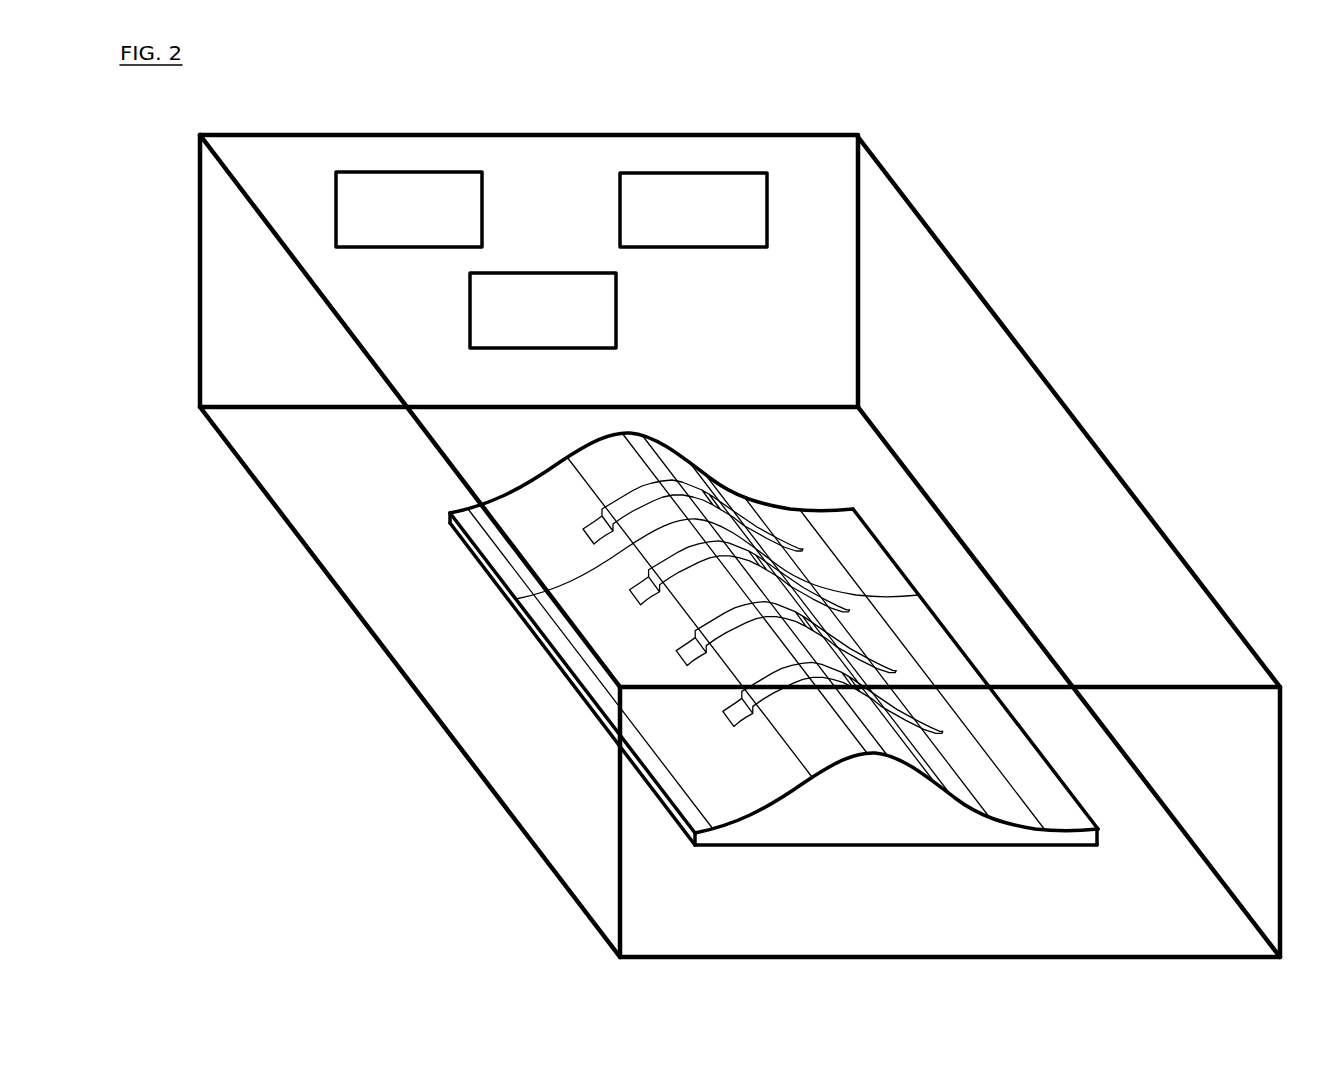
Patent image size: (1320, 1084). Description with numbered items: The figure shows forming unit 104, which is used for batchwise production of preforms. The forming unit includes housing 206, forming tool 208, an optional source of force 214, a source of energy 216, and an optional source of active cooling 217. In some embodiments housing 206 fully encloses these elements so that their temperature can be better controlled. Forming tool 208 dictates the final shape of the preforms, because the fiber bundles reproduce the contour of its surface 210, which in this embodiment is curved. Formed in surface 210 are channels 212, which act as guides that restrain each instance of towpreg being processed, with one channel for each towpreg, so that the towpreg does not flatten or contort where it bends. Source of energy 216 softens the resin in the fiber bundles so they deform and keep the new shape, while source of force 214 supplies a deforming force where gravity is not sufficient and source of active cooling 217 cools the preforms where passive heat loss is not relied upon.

The forming unit 104 is at (990, 189).
The housing 206 is at (975, 281).
The forming tool 208 is at (650, 437).
The surface 210 is at (622, 493).
The channels 212 is at (712, 490).
The source of force 214 is at (483, 210).
The source of energy 216 is at (768, 210).
The source of active cooling 217 is at (617, 311).